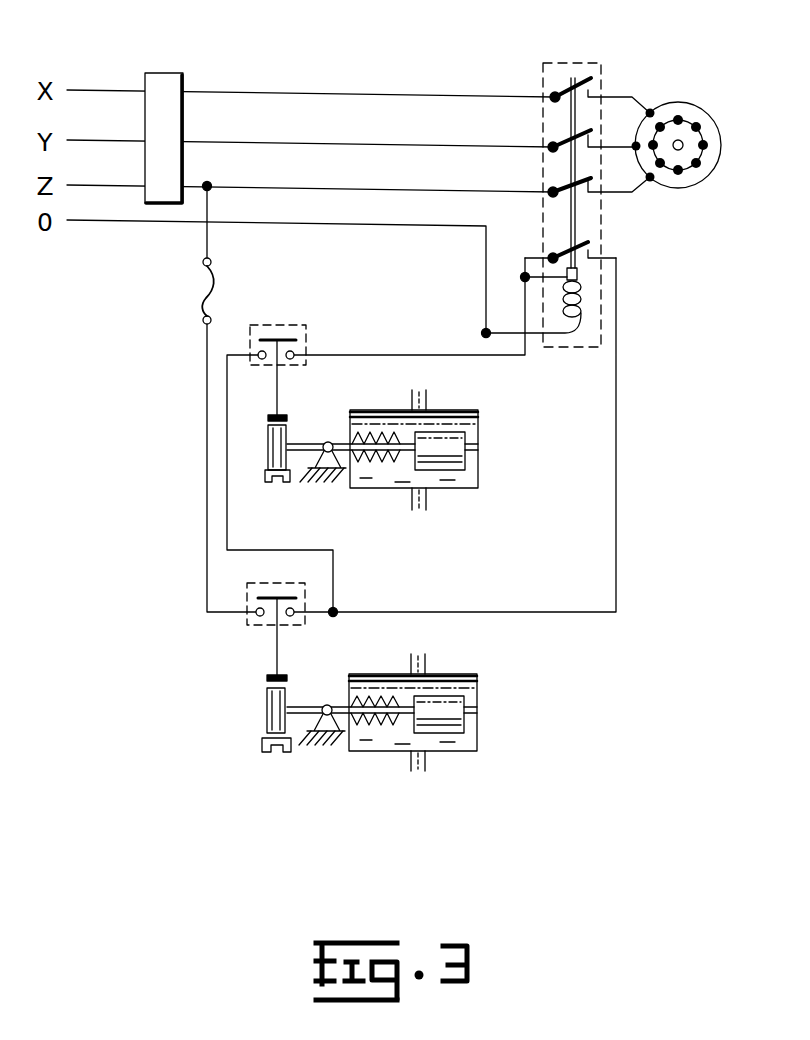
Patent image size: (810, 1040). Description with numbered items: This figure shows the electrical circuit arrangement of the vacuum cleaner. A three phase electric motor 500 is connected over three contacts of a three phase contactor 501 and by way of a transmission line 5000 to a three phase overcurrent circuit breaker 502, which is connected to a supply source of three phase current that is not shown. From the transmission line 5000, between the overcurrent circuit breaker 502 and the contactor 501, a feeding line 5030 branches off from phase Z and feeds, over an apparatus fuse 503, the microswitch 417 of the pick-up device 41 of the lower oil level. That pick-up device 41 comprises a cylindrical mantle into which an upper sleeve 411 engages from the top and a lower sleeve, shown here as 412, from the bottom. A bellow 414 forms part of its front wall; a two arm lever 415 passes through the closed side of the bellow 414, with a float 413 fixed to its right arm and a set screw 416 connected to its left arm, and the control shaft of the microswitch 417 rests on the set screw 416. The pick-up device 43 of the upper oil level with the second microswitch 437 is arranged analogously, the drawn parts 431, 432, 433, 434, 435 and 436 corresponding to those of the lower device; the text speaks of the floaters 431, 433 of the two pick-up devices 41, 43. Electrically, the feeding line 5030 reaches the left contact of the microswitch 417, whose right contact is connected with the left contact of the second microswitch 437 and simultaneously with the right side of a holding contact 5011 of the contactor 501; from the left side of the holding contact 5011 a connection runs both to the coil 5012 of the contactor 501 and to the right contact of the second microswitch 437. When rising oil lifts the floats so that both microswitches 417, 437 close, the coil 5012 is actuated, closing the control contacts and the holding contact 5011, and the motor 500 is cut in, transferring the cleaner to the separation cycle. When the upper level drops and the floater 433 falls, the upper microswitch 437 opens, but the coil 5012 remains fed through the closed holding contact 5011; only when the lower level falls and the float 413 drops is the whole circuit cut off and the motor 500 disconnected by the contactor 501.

The three phase electric motor 500 is at (692, 103).
The three phase contactor 501 is at (570, 63).
The three phase overcurrent circuit breaker 502 is at (165, 73).
The apparatus fuse 503 is at (212, 273).
The transmission line 5000 is at (298, 187).
The holding contact 5011 is at (585, 248).
The coil 5012 is at (580, 300).
The feeding line 5030 is at (207, 247).
The pick-up device of the lower oil level 41 is at (442, 714).
The upper sleeve 411 is at (425, 660).
The outlet port of cylinder 41 412 is at (428, 765).
The float 413 is at (479, 710).
The bellow 414 is at (373, 696).
The two arm lever 415 is at (295, 708).
The set screw 416 is at (270, 752).
The microswitch 417 is at (250, 626).
The pick-up device of the upper oil level 43 is at (453, 450).
The floater 431 is at (428, 395).
The outlet port of cylinder 43 432 is at (430, 500).
The floater 433 is at (480, 447).
The return spring of cylinder 43 434 is at (383, 432).
The piston rod / lever of cylinder 43 435 is at (297, 445).
The actuator of switch 437 436 is at (276, 482).
The second microswitch 437 is at (295, 325).